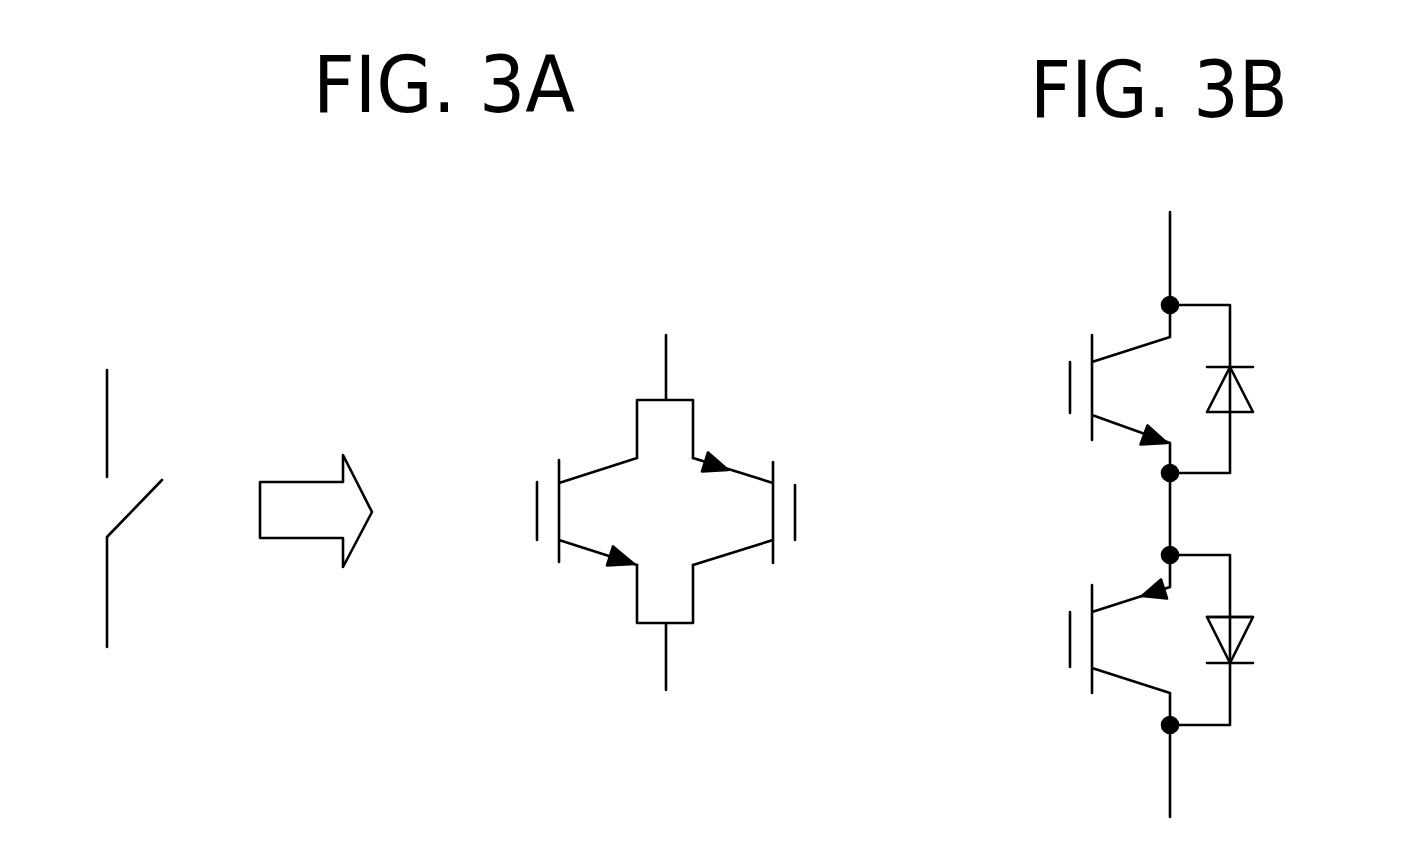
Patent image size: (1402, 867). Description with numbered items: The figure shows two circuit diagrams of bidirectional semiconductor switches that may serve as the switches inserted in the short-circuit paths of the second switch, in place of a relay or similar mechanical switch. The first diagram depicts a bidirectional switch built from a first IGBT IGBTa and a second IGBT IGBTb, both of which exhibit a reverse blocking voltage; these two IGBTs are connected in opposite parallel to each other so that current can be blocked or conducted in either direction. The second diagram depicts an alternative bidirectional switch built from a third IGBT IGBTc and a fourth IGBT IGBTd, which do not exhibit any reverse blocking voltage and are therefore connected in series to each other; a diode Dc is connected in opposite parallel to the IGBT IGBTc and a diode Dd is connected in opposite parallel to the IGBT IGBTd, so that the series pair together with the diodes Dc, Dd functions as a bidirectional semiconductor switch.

In FIG. 3A, the IGBT IGBTa is at (559, 552).
In FIG. 3A, the IGBT IGBTb is at (795, 497).
In FIG. 3B, the IGBT IGBTc is at (1070, 371).
In FIG. 3B, the IGBT IGBTd is at (1070, 649).
In FIG. 3B, the diode Dc is at (1245, 392).
In FIG. 3B, the diode Dd is at (1245, 625).